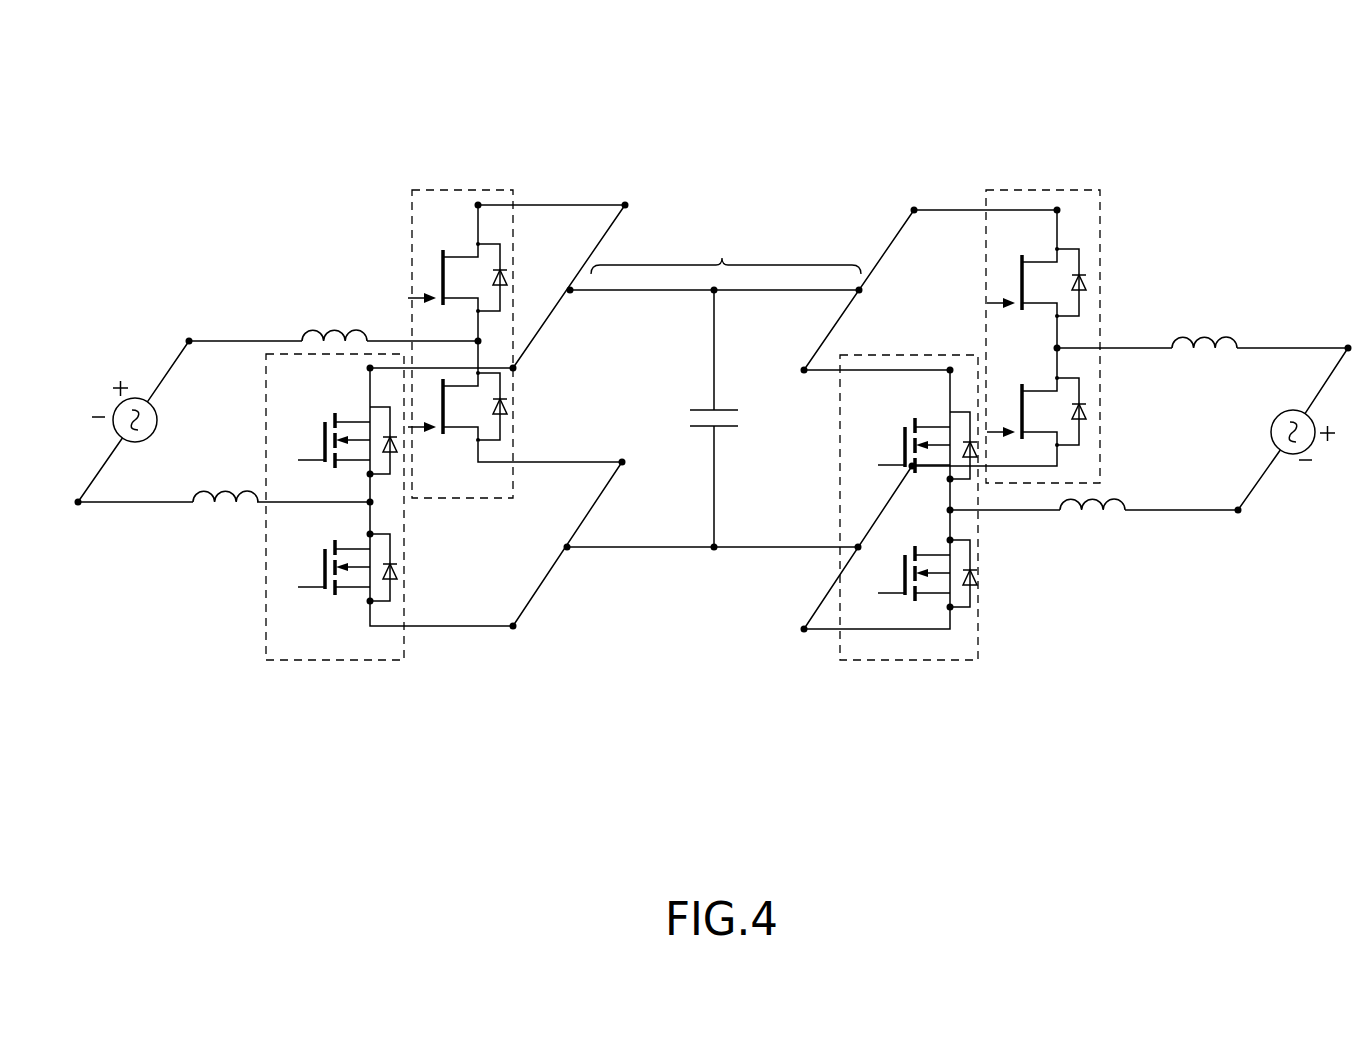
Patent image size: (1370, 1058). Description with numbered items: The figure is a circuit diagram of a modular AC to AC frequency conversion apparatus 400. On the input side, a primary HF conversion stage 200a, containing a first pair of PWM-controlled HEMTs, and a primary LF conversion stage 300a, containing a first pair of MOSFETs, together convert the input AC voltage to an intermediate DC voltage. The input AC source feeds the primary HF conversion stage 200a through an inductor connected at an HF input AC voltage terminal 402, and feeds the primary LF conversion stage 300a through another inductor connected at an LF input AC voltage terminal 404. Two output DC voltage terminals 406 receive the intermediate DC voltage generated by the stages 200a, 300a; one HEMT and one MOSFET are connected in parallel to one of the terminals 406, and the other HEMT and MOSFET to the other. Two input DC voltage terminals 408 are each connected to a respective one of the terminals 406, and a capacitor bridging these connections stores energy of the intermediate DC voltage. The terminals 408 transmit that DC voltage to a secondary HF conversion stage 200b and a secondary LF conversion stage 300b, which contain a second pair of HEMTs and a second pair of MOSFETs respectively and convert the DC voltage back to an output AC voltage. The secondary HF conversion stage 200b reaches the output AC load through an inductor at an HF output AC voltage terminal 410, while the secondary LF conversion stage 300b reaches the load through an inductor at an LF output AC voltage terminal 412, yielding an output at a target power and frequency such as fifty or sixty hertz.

The modular AC to AC frequency conversion apparatus 400 is at (180, 76).
The primary HF conversion stage 200a is at (457, 190).
The secondary HF conversion stage 200b is at (1067, 190).
The primary LF conversion stage 300a is at (318, 660).
The secondary LF conversion stage 300b is at (875, 660).
The HF input AC voltage terminal 402 is at (476, 343).
The LF input AC voltage terminal 404 is at (370, 504).
The output DC voltage terminals 406 is at (570, 288).
The input DC voltage terminals 408 is at (859, 288).
The HF output AC voltage terminal 410 is at (1060, 348).
The LF output AC voltage terminal 412 is at (953, 511).